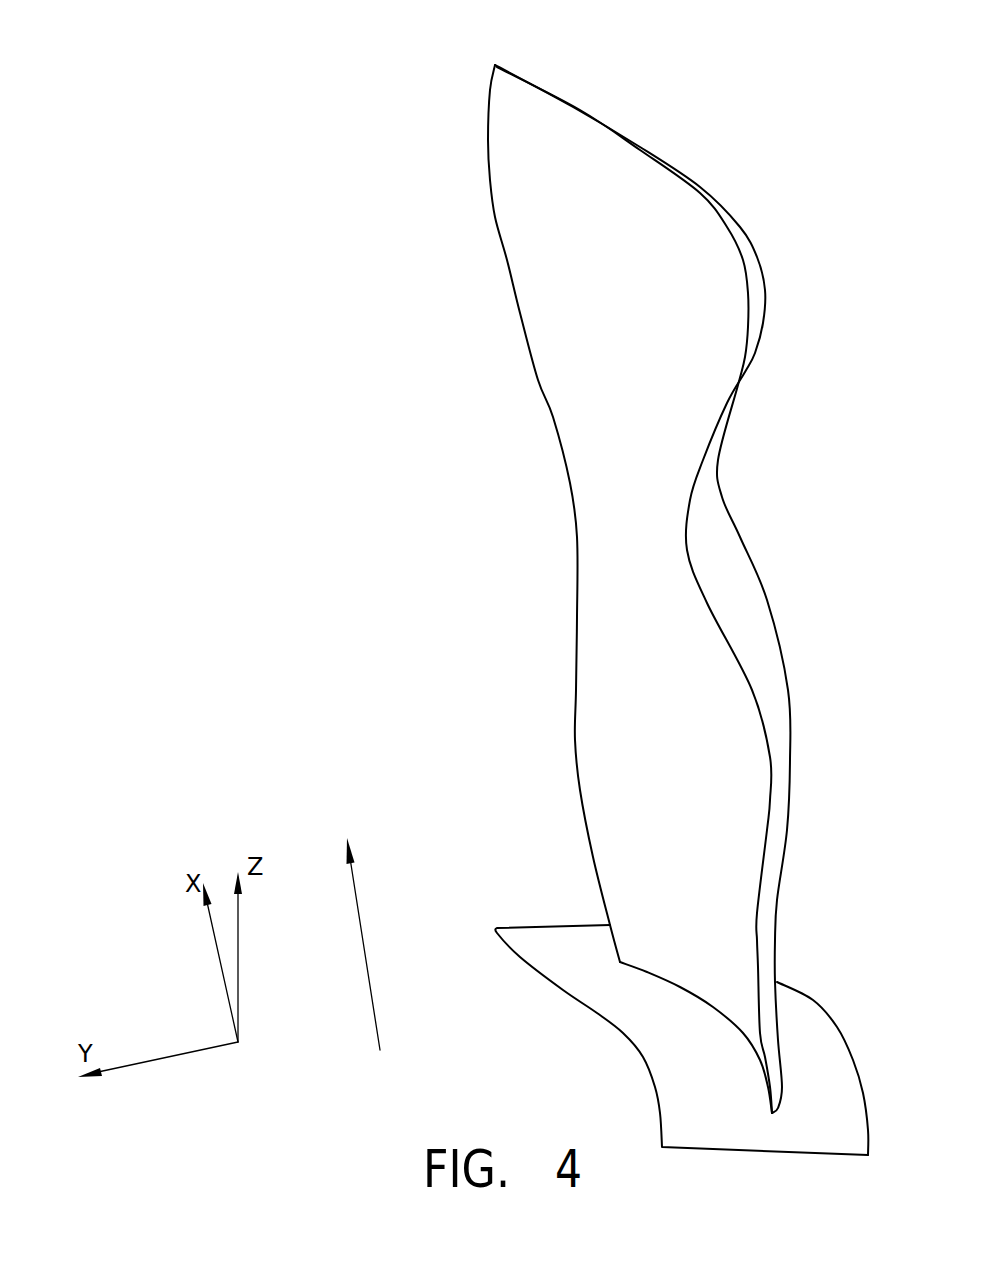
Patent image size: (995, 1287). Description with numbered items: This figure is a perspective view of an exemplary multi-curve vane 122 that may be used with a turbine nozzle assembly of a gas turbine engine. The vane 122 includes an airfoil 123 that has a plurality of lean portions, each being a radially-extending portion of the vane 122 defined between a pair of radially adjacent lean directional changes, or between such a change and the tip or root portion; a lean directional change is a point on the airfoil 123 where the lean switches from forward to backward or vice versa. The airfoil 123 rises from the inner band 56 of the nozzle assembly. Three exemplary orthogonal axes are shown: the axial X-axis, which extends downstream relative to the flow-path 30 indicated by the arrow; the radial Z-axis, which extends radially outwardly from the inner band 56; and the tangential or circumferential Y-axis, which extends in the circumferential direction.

The multi-curve vane 122 is at (795, 48).
The airfoil 123 is at (535, 147).
The inner band 56 is at (837, 1077).
The flow-path 30 is at (363, 943).